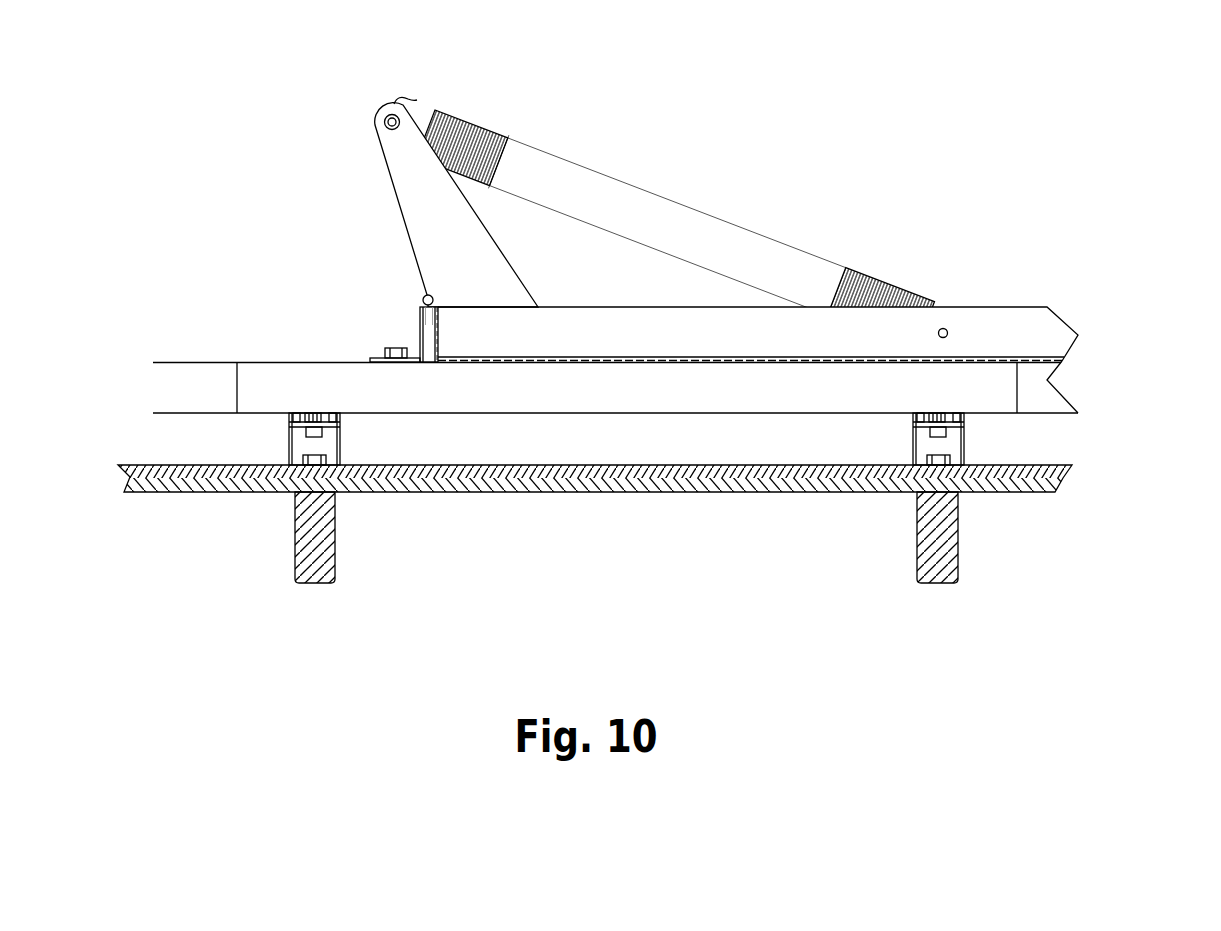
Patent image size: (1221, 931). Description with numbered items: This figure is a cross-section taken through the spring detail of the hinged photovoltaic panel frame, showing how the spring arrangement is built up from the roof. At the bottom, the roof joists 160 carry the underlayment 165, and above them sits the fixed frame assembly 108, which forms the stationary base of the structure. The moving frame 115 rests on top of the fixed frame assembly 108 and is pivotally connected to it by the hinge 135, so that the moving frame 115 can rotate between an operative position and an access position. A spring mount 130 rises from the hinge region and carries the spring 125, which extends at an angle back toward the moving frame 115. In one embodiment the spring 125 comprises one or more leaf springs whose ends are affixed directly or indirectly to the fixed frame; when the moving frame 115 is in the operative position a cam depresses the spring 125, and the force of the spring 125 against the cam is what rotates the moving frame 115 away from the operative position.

The fixed frame assembly 108 is at (1050, 385).
The moving frame 115 is at (993, 315).
The spring 125 is at (472, 130).
The spring mount 130 is at (415, 222).
The hinge 135 is at (418, 317).
The roof joists 160 is at (327, 567).
The underlayment 165 is at (610, 487).